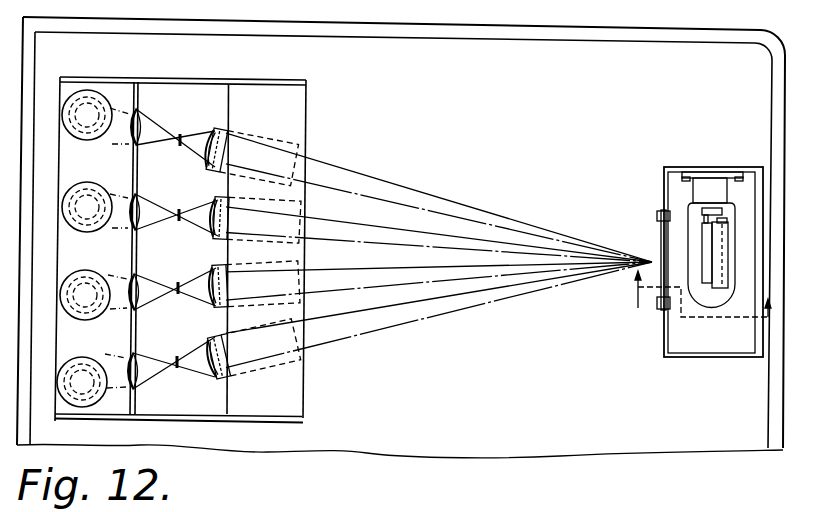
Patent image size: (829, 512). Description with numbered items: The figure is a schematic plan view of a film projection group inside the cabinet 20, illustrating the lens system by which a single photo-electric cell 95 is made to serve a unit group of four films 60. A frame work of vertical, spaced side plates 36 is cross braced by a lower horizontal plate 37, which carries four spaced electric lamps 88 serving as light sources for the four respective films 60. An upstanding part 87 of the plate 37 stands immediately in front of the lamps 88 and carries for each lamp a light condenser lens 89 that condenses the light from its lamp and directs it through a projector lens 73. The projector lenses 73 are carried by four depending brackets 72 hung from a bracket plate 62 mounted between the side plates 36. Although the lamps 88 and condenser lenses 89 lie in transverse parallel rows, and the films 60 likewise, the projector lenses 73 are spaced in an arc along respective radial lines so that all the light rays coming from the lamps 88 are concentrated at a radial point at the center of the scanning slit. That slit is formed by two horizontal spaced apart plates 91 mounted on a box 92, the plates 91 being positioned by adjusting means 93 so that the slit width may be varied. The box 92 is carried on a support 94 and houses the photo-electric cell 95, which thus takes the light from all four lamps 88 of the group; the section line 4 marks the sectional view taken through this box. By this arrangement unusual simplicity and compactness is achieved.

The cabinet 20 is at (512, 32).
The side plates 36 is at (307, 420).
The lower horizontal plate 37 is at (118, 93).
The film 60 is at (180, 134).
The bracket plate 62 is at (268, 100).
The depending brackets 72 is at (270, 147).
The projection lens 73 is at (207, 280).
The upstanding part 87 is at (137, 332).
The electric lamps 88 is at (78, 92).
The light condenser lens 89 is at (128, 205).
The plates 91 is at (660, 227).
The box 92 is at (673, 167).
The adjusting means 93 is at (668, 309).
The support 94 is at (760, 167).
The photo-electric cell 95 is at (690, 243).
The section line 4- 4 is at (640, 331).